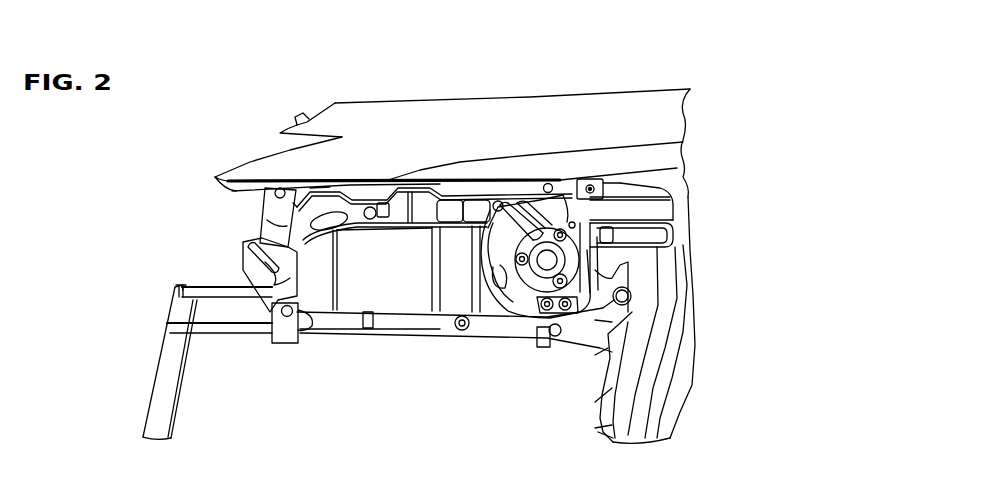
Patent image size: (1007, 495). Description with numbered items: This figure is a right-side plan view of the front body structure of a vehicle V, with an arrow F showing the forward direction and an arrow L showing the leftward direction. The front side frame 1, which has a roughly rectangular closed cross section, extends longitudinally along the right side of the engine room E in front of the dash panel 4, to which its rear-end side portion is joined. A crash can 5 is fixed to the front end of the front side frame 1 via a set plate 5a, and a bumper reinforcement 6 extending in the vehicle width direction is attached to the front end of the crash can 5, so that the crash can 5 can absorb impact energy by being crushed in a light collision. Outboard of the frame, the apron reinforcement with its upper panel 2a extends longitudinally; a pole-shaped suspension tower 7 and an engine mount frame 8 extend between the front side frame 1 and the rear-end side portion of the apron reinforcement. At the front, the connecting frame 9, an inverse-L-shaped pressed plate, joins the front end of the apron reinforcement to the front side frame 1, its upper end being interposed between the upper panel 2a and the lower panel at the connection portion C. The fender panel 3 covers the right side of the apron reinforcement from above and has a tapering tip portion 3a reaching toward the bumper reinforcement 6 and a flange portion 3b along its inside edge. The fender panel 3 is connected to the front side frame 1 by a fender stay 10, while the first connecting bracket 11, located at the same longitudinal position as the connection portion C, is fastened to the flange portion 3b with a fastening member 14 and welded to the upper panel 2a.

The front side frame 1 is at (408, 328).
The upper panel 2a is at (382, 227).
The fender panel 3 is at (560, 95).
The tip portion 3a is at (233, 180).
The flange portion 3b is at (362, 188).
The dash panel 4 is at (610, 390).
The crash can 5 is at (225, 335).
The set plate 5a is at (269, 343).
The bumper reinforcement 6 is at (150, 394).
The suspension tower 7 is at (546, 235).
The engine mount frame 8 is at (440, 267).
The connecting frame 9 is at (243, 257).
The fender stay 10 is at (340, 282).
The first connecting bracket 11 is at (262, 232).
The fastening member 14 is at (270, 197).
The vehicle V is at (411, 72).
The connection portion C is at (290, 259).
The engine room E is at (463, 415).
The arrow F is at (808, 435).
The arrow L is at (810, 412).